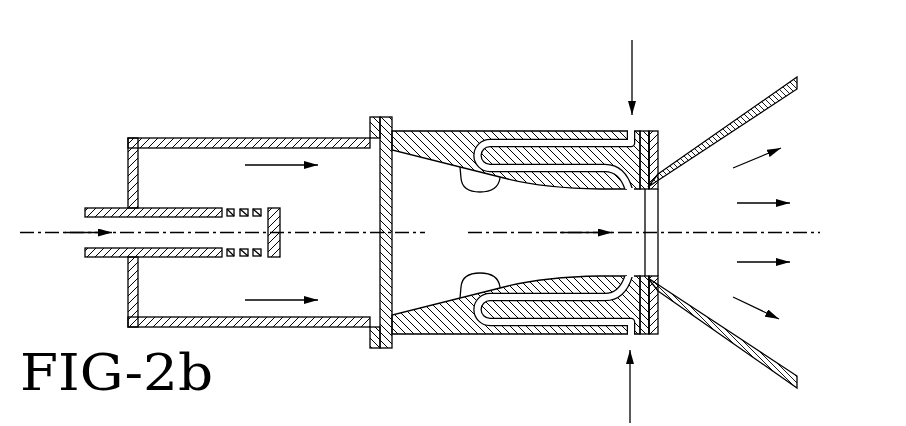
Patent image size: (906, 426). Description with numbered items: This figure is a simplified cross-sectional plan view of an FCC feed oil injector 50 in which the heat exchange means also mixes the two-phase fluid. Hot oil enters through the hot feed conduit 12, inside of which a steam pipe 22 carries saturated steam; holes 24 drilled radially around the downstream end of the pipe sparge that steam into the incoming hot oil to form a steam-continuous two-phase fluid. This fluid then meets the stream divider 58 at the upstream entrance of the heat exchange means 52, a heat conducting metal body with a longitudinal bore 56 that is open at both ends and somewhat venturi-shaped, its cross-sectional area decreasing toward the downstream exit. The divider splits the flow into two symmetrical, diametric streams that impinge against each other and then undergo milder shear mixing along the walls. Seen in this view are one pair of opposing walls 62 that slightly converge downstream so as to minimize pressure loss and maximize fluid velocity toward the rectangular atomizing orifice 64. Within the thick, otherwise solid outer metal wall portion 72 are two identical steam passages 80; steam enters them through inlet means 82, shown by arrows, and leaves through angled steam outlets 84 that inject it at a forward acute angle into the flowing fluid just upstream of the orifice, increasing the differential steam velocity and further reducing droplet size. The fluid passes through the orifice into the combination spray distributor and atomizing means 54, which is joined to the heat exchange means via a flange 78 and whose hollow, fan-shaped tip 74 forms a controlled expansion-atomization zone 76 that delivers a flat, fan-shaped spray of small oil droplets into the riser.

The FCC feed oil injector 50 is at (92, 152).
The hot feed conduit 12 is at (299, 328).
The steam pipe 22 is at (110, 258).
The holes 24 is at (262, 207).
The stream divider 58 is at (380, 215).
The heat exchange means 52 is at (428, 133).
The outer metal wall portion 72 is at (423, 336).
The steam passages 80 is at (530, 141).
The inlet means 82 is at (632, 130).
The steam outlets 84 is at (636, 190).
The opposing walls 62 is at (458, 167).
The longitudinal bore 56 is at (464, 247).
The combination spray distributor and atomizing means 54 is at (660, 170).
The fan-shaped spray distributor or tip 74 is at (740, 113).
The atomizing orifice 64 is at (652, 262).
The controlled expansion-atomization zone 76 is at (720, 215).
The flange 78 is at (657, 313).